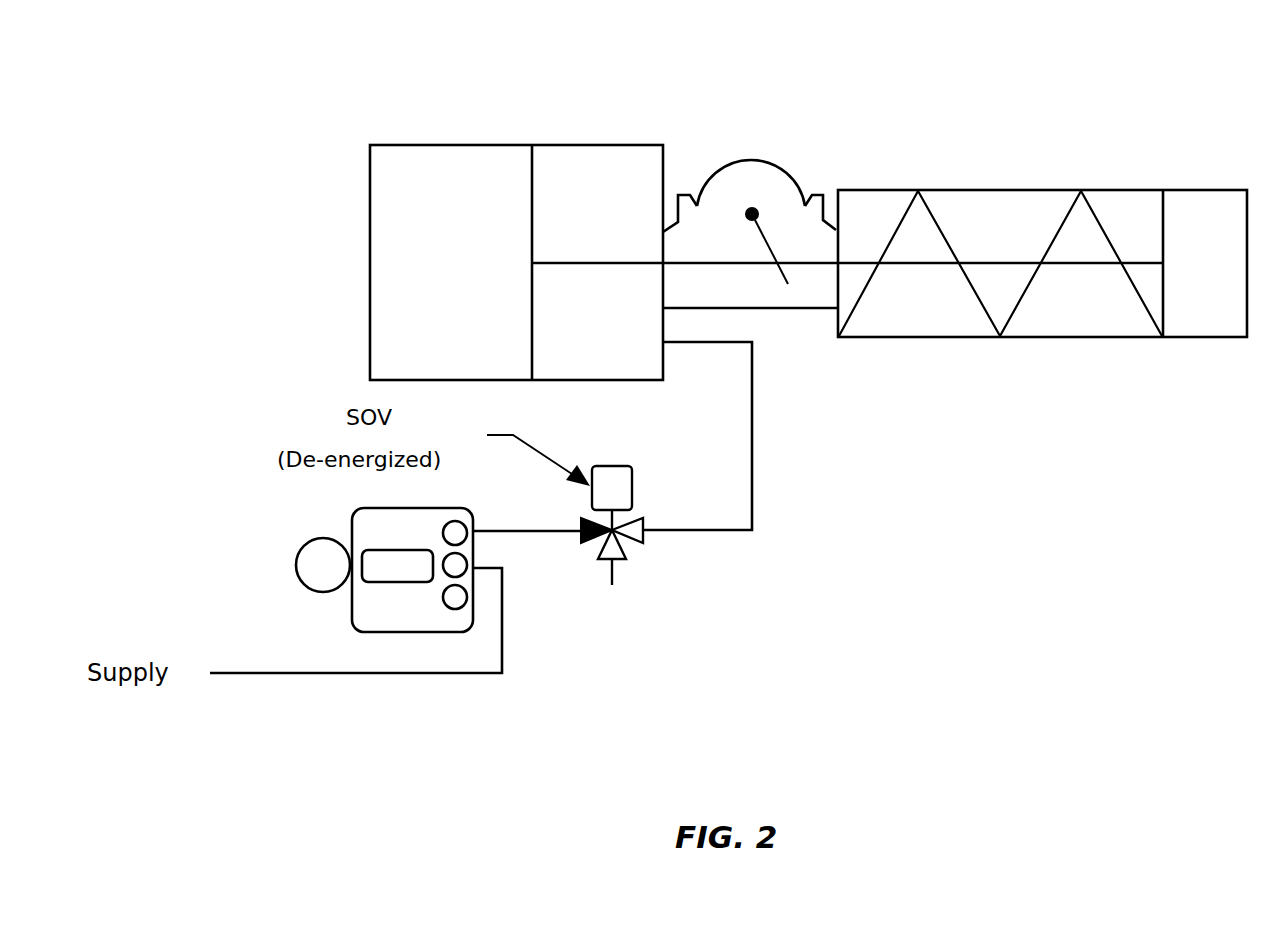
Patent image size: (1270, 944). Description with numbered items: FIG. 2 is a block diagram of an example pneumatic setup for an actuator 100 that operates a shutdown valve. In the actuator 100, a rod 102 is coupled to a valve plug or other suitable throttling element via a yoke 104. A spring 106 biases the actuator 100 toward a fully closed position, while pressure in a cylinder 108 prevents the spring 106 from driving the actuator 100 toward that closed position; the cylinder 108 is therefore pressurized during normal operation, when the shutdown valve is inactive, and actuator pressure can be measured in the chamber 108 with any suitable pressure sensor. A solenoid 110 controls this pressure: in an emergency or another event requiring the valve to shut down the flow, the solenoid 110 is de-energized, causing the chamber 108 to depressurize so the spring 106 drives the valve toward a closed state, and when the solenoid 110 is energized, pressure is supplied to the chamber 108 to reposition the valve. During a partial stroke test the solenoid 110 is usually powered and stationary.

The actuator 100 is at (624, 88).
The rod 102 is at (1082, 258).
The yoke 104 is at (763, 237).
The spring 106 is at (893, 228).
The cylinder 108 is at (586, 357).
The solenoid 110 is at (633, 480).